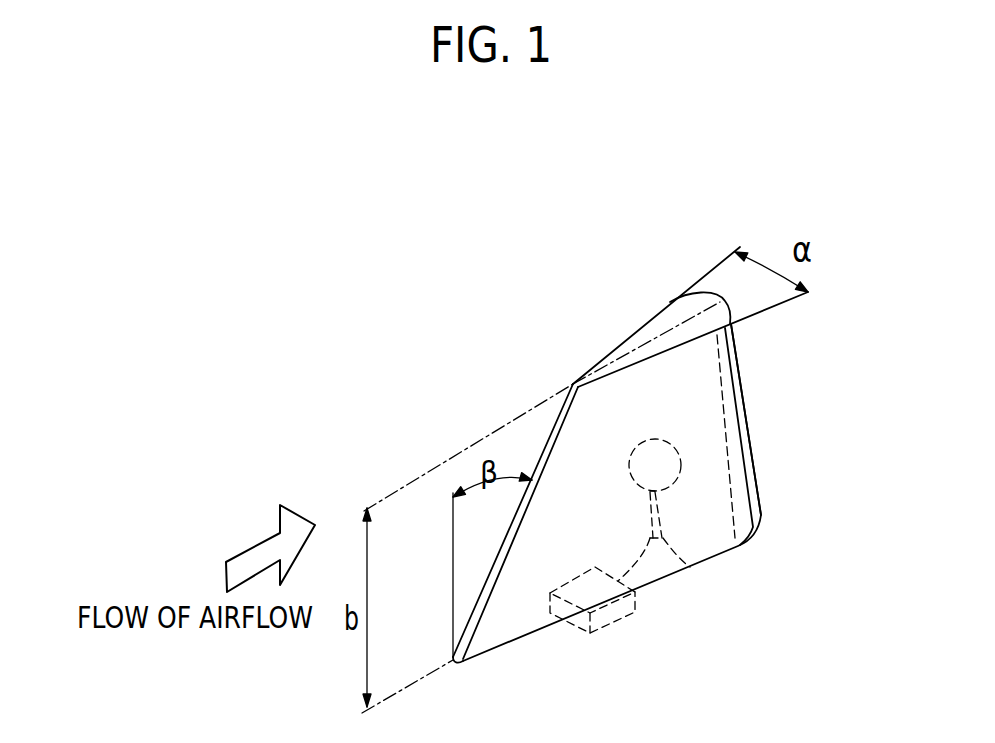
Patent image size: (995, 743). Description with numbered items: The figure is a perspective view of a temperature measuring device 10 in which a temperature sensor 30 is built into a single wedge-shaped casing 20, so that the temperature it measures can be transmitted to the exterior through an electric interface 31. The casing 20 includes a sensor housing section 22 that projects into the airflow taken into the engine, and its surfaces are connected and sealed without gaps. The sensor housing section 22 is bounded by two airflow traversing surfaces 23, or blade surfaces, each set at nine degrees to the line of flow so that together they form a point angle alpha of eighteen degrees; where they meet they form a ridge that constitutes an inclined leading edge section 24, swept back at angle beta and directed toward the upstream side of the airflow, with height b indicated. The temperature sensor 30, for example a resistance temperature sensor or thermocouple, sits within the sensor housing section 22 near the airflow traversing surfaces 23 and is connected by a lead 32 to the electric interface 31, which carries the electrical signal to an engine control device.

The temperature measuring device 10 is at (632, 172).
The casing 20 is at (562, 381).
The sensor housing section 22 is at (735, 478).
The airflow traversing surfaces 23 is at (638, 397).
The leading edge section 24 is at (546, 435).
The temperature sensor 30 is at (673, 447).
The electric interface 31 is at (628, 615).
The lead 32 is at (690, 567).